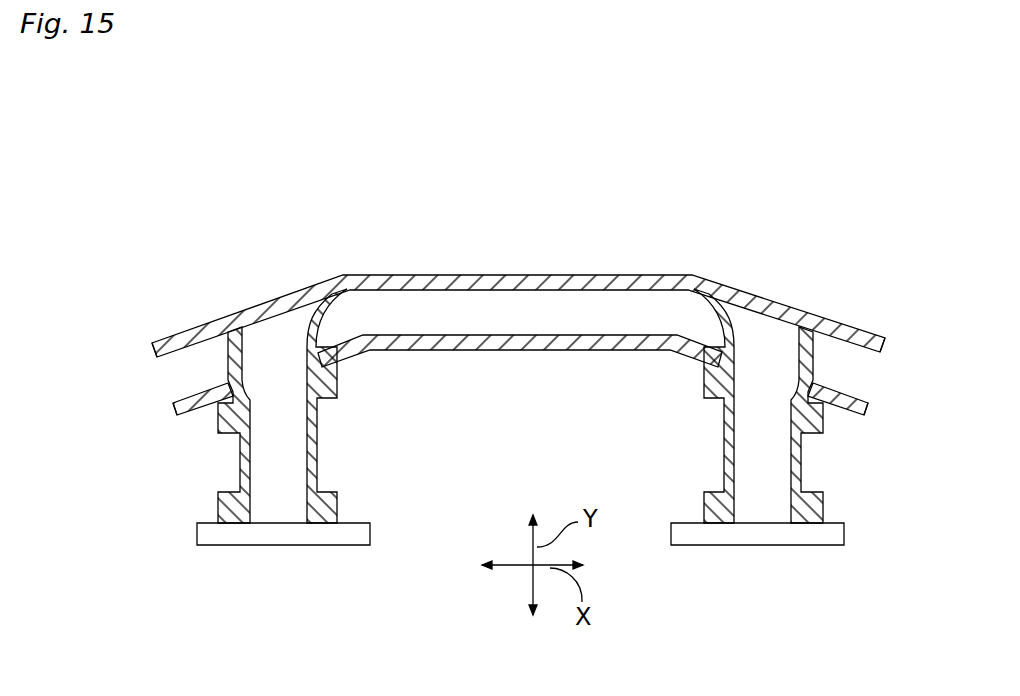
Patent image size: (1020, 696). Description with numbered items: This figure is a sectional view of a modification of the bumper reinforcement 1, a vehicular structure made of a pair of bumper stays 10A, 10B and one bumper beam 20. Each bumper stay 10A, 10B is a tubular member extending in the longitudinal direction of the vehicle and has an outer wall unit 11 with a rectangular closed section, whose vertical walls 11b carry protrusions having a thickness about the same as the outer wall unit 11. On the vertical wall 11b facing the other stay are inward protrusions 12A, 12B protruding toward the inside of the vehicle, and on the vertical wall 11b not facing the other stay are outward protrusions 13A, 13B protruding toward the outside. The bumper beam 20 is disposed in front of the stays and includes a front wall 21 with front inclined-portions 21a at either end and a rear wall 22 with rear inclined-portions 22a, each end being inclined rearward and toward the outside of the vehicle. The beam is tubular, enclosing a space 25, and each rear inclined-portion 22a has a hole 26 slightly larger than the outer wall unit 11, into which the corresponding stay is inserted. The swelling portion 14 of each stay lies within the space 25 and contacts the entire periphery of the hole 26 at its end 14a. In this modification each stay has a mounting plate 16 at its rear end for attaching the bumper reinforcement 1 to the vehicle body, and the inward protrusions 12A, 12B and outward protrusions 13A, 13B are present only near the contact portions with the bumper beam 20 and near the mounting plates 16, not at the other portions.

The bumper reinforcement 1 is at (300, 255).
The bumper stay 10A is at (343, 440).
The bumper stay 10B is at (698, 430).
The outer wall unit 11 is at (317, 530).
The vertical wall 11b is at (240, 487).
The inward protrusion 12A is at (333, 373).
The inward protrusion 12B is at (710, 373).
The outward protrusion 13A is at (230, 415).
The outward protrusion 13B is at (820, 412).
The swelling portion 14 is at (219, 325).
The end of swelling portion 14a is at (222, 373).
The mounting plate 16 is at (225, 540).
The bumper beam 20 is at (610, 262).
The front wall 21 is at (552, 280).
The front inclined-portion 21a is at (152, 337).
The rear wall 22 is at (545, 352).
The rear inclined-portion 22a is at (173, 413).
The space 25 is at (495, 323).
The hole 26 is at (240, 442).